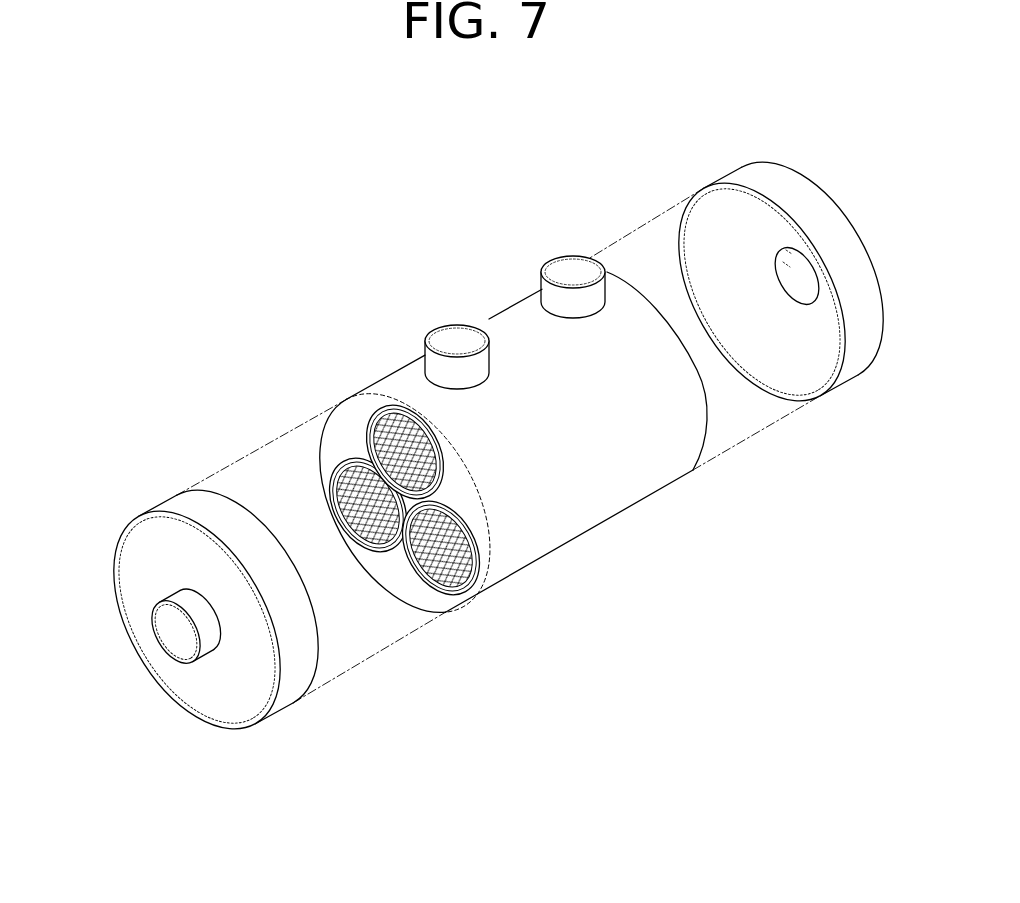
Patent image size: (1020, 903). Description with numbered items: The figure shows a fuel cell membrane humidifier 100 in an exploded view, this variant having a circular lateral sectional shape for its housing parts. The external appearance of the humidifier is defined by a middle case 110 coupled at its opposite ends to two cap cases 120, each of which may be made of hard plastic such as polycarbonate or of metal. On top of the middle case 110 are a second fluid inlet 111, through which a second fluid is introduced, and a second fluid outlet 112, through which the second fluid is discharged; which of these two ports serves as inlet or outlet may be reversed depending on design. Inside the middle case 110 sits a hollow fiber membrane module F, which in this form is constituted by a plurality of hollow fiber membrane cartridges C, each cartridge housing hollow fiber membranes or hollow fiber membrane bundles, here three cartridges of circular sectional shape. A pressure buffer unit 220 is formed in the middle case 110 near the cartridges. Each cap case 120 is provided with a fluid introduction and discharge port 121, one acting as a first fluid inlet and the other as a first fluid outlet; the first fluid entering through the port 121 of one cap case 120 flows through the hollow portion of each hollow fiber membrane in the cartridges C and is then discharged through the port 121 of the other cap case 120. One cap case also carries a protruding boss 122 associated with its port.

The exhaust gas purification apparatus 100 is at (494, 275).
The middle case 110 is at (587, 498).
The second fluid inlet 111 is at (453, 340).
The second fluid outlet 112 is at (572, 268).
The cap case 120 is at (712, 218).
The fluid introduction and discharge port 121 is at (790, 255).
The protrusion 122 is at (167, 613).
The pressure buffer unit 220 is at (333, 462).
The hollow fiber membrane cartridge C is at (383, 552).
The hollow fiber membrane module F is at (440, 697).